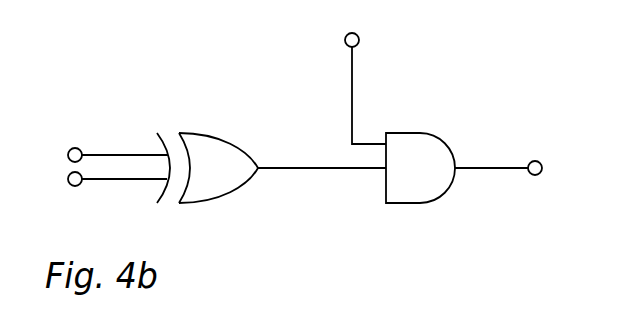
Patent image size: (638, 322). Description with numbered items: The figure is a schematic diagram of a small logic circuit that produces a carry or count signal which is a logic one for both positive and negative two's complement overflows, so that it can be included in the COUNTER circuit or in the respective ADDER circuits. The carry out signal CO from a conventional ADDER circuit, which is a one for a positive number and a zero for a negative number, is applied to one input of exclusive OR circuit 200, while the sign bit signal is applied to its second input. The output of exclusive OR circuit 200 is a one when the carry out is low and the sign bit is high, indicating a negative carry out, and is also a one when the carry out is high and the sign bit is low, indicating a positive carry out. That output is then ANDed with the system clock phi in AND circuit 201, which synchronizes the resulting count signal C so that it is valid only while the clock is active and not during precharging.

The exclusive OR circuit 200 is at (207, 168).
The AND circuit 201 is at (420, 168).
The carry out signal CO is at (98, 149).
The system clock phi is at (365, 73).
The count signal C is at (514, 165).